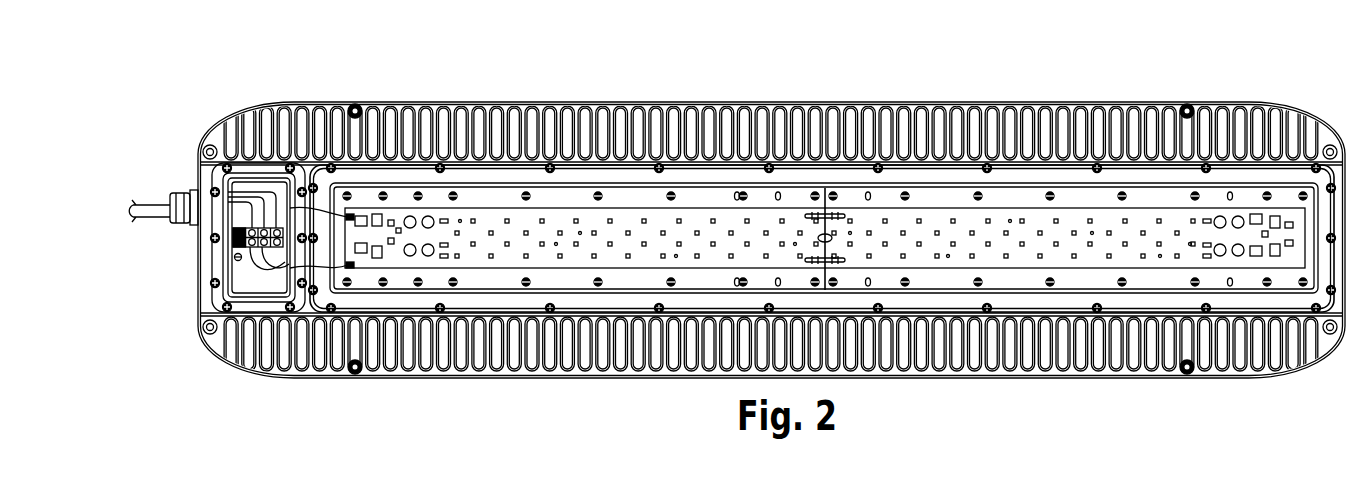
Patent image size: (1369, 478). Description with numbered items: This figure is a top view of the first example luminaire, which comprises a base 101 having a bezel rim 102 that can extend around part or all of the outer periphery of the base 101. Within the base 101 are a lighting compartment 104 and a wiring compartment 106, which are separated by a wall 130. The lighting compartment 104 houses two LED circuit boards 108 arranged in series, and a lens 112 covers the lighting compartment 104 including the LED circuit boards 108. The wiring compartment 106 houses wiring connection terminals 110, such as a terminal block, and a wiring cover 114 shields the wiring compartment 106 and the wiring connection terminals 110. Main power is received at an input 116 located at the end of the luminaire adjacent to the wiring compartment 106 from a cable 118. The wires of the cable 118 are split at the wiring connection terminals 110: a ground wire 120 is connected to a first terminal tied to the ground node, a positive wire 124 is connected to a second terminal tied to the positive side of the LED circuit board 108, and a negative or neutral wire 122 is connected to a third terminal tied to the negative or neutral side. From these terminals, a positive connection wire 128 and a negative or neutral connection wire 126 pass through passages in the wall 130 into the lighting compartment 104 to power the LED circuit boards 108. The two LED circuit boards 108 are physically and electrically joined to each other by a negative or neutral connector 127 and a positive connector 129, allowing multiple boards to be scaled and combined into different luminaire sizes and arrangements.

The base 101 is at (1113, 178).
The bezel rim 102 is at (226, 90).
The lighting compartment 104 is at (660, 217).
The wiring compartment 106 is at (257, 283).
The LED circuit board 108 is at (766, 220).
The wiring connection terminals 110 is at (286, 227).
The lens 112 is at (1003, 296).
The wiring cover 114 is at (280, 268).
The input 116 is at (171, 228).
The cable 118 is at (147, 201).
The ground wire 120 is at (236, 260).
The negative or neutral wire 122 is at (266, 191).
The positive wire 124 is at (266, 266).
The negative or neutral connection wire 126 is at (353, 214).
The negative or neutral connector 127 is at (827, 189).
The positive connection wire 128 is at (353, 268).
The positive connector 129 is at (827, 263).
The wall 130 is at (308, 242).